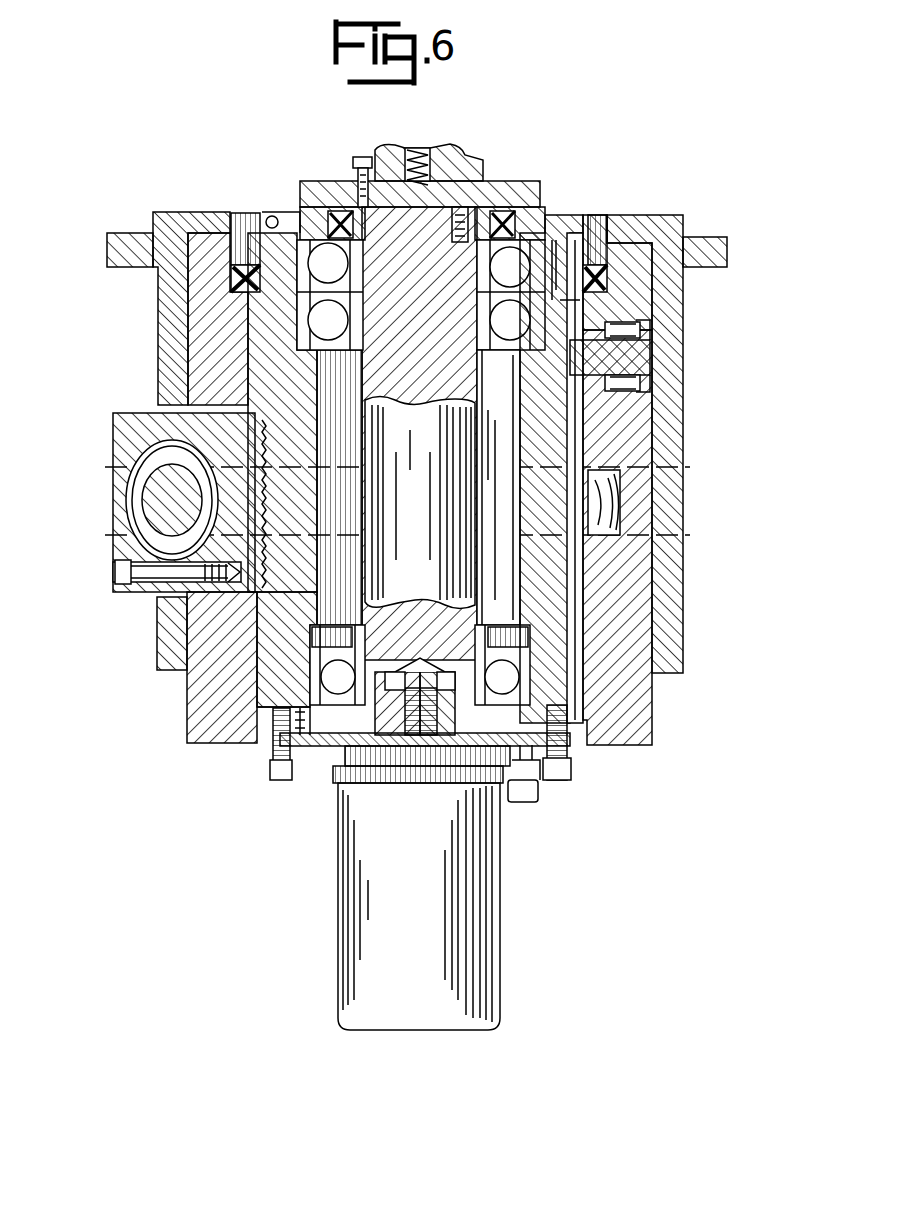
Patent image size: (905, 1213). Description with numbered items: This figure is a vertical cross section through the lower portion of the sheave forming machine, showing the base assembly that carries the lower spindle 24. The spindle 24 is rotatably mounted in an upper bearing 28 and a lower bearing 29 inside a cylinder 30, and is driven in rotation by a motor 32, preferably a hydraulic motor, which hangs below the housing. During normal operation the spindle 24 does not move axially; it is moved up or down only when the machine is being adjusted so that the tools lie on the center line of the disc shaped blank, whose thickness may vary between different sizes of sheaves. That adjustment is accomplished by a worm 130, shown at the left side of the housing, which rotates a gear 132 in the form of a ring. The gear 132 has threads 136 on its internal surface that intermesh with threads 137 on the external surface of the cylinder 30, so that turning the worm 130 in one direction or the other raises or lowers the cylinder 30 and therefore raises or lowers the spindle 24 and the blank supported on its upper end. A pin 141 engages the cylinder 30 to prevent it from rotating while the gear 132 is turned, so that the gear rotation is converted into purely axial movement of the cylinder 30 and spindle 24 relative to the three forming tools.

The spindle 24 is at (465, 162).
The bearing 28 is at (545, 270).
The bearing 29 is at (318, 688).
The cylinder 30 is at (560, 452).
The motor 32 is at (485, 942).
The worm 130 is at (140, 513).
The gear 132 is at (613, 500).
The threads 136 is at (577, 490).
The threads 137 is at (590, 428).
The pin 141 is at (635, 353).